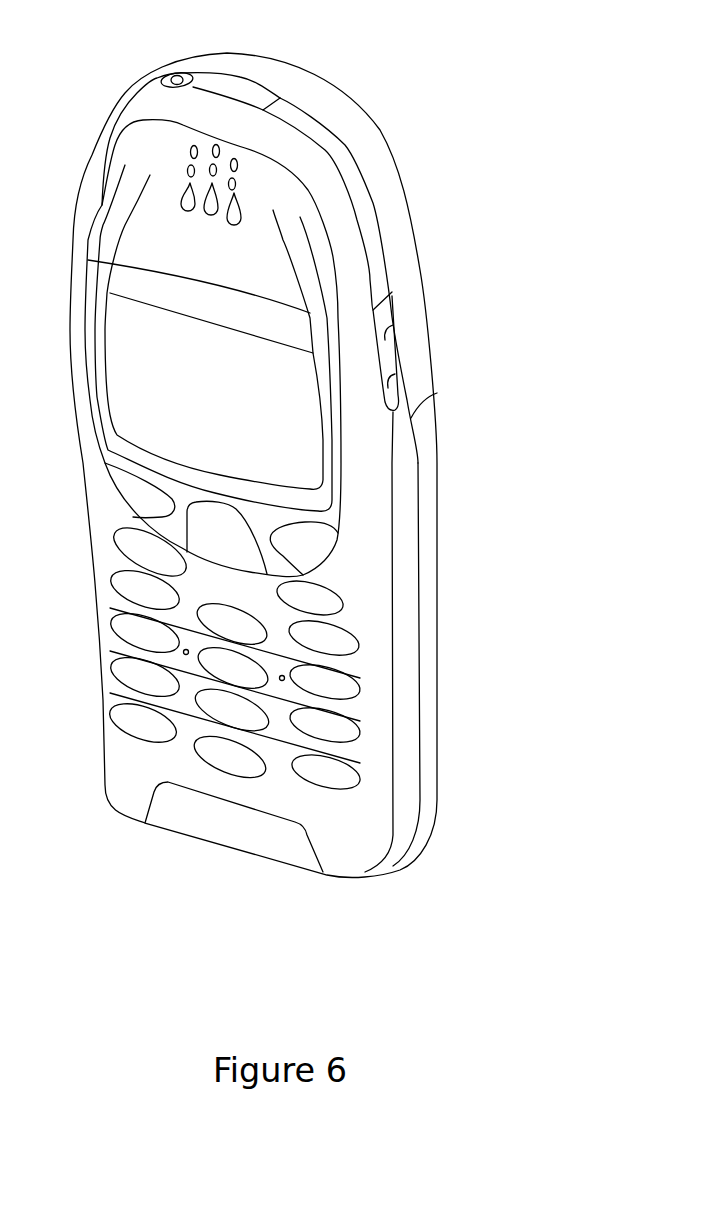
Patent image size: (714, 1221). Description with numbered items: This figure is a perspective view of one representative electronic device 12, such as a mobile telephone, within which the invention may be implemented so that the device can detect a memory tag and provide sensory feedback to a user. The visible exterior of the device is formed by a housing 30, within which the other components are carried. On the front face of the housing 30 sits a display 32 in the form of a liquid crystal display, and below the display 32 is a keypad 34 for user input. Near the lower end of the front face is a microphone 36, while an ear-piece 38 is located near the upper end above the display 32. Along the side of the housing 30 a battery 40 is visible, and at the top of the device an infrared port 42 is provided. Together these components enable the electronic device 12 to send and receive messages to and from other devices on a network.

The electronic device 12 is at (372, 62).
The housing 30 is at (400, 218).
The display 32 is at (300, 437).
The keypad 34 is at (323, 778).
The microphone 36 is at (172, 818).
The ear-piece 38 is at (184, 177).
The battery 40 is at (430, 757).
The infrared port 42 is at (235, 88).